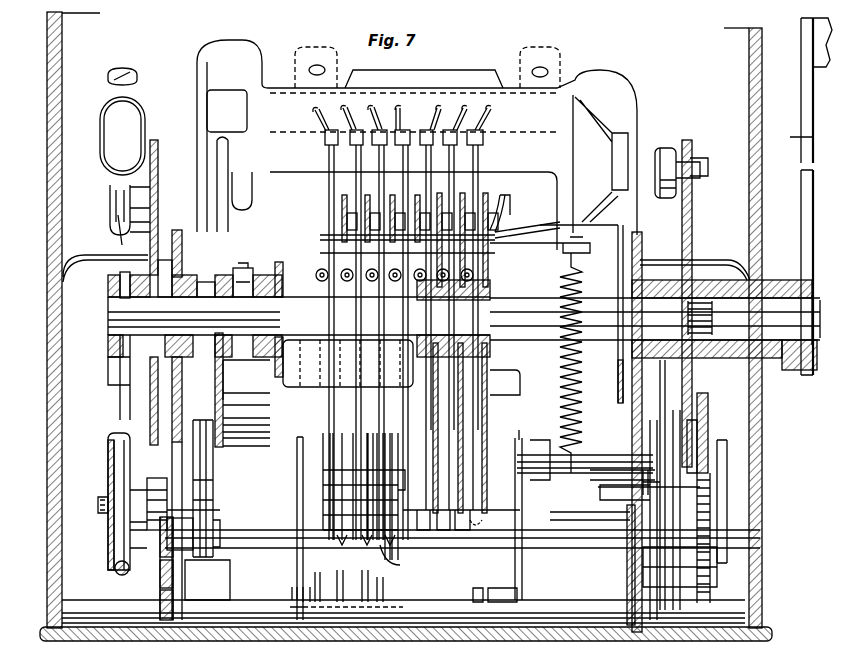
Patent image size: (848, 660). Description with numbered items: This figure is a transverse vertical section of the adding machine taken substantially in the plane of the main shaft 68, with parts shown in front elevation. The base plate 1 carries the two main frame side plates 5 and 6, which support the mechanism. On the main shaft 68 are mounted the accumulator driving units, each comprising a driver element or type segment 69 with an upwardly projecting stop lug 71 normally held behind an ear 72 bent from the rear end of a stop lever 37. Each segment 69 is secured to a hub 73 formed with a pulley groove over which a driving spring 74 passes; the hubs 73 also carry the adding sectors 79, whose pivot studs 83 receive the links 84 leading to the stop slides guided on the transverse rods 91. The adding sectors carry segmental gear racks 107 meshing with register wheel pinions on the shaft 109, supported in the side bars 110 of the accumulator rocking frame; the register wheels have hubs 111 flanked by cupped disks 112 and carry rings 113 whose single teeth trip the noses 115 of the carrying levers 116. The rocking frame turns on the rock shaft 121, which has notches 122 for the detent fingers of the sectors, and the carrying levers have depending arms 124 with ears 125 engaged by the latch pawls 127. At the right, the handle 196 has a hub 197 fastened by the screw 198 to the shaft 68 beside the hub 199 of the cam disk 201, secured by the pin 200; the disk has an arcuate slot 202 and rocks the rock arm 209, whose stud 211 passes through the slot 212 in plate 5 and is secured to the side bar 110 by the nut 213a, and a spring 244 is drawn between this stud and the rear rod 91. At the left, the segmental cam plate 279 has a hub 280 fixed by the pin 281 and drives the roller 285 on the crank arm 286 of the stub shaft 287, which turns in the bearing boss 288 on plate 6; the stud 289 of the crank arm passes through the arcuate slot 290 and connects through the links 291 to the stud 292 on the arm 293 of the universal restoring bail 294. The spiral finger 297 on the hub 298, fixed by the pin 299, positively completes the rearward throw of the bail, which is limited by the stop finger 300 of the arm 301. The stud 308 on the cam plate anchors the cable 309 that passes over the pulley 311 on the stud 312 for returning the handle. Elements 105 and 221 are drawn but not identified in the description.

The base plate 1 is at (672, 634).
The main frame side plate 5 is at (638, 232).
The main frame side plate 6 is at (178, 238).
The stop lever 37 is at (316, 114).
The main shaft 68 is at (612, 280).
The driver element 69 is at (340, 210).
The stop lug 71 is at (370, 156).
The ear 72 is at (354, 126).
The hub 73 is at (345, 335).
The driving spring 74 is at (322, 269).
The adding sector 79 is at (322, 254).
The pivot stud 83 is at (506, 198).
The link 84 is at (328, 238).
The transverse rod 91 is at (590, 240).
The slide 105 is at (345, 444).
The segmental gear rack 107 is at (356, 420).
The transverse rod 109 is at (400, 470).
The side bar 110 is at (297, 460).
The hub 111 is at (355, 492).
The cupped disk 112 is at (398, 566).
The ring 113 is at (335, 478).
The nose 115 is at (325, 556).
The carrying lever 116 is at (340, 573).
The rock shaft 121 is at (553, 475).
The notch 122 is at (462, 530).
The depending arm 124 is at (388, 594).
The ear 125 is at (390, 610).
The latch pawl 127 is at (360, 590).
The general operating handle 196 is at (801, 196).
The hub 197 is at (770, 280).
The screw 198 is at (655, 320).
The hub 199 is at (670, 260).
The pin 200 is at (650, 345).
The cam disk 201 is at (692, 228).
The arcuate slot 202 is at (692, 400).
The rock arm 209 is at (650, 488).
The stud 211 is at (620, 470).
The slot 212 is at (630, 445).
The nut 213a is at (512, 424).
The knob 221 is at (665, 150).
The spring 244 is at (583, 374).
The segmental cam plate 279 is at (160, 150).
The hub 280 is at (108, 346).
The pin 281 is at (118, 292).
The roller 285 is at (152, 478).
The crank arm 286 is at (165, 567).
The stub shaft 287 is at (163, 594).
The bearing boss 288 is at (162, 612).
The stud 289 is at (175, 530).
The arcuate slot 290 is at (205, 462).
The connecting link 291 is at (206, 480).
The stud 292 is at (242, 416).
The arm 293 is at (265, 441).
The universal restoring bail 294 is at (266, 368).
The spiral finger 297 is at (298, 172).
The hub 298 is at (250, 292).
The pin 299 is at (246, 268).
The stop finger 300 is at (158, 313).
The arm 301 is at (215, 348).
The stud 308 is at (108, 205).
The cable 309 is at (112, 258).
The pulley 311 is at (108, 447).
The stud 312 is at (98, 505).